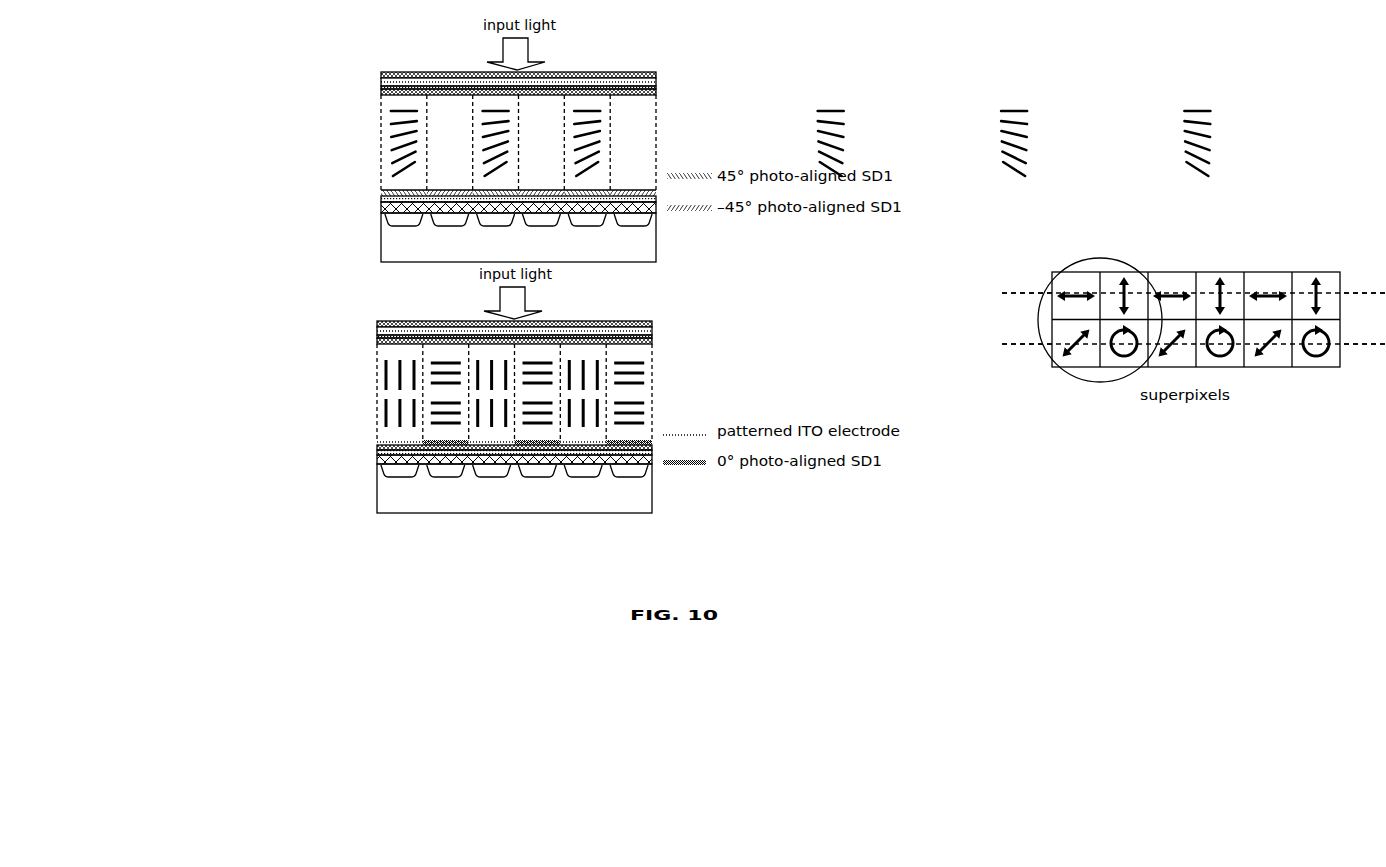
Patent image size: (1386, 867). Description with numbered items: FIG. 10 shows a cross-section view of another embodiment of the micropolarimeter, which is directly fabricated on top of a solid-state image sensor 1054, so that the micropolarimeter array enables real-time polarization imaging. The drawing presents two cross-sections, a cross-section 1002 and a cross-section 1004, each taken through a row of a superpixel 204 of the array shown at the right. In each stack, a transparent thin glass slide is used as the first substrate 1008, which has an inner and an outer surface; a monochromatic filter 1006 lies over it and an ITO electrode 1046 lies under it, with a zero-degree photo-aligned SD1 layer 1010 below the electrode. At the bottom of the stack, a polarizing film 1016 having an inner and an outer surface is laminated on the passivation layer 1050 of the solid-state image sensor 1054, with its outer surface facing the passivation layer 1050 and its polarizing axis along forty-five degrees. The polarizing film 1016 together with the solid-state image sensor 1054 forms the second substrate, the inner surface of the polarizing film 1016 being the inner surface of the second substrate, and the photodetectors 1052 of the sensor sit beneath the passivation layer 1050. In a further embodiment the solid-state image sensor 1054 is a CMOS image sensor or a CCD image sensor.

The monochromatic filter 1006 is at (381, 75).
The first substrate 1008 is at (381, 80).
The ITO electrode 1046 is at (381, 88).
The 0° photo-aligned SD1 1010 is at (381, 95).
The cross-section 1002 is at (997, 289).
The cross-section 1004 is at (1002, 345).
The polarizing film 1016 is at (381, 199).
The passivation layer 1050 is at (381, 208).
The photodetector 1052 is at (397, 218).
The solid-state image sensor 1054 is at (538, 363).
The superpixel 204 is at (1106, 250).